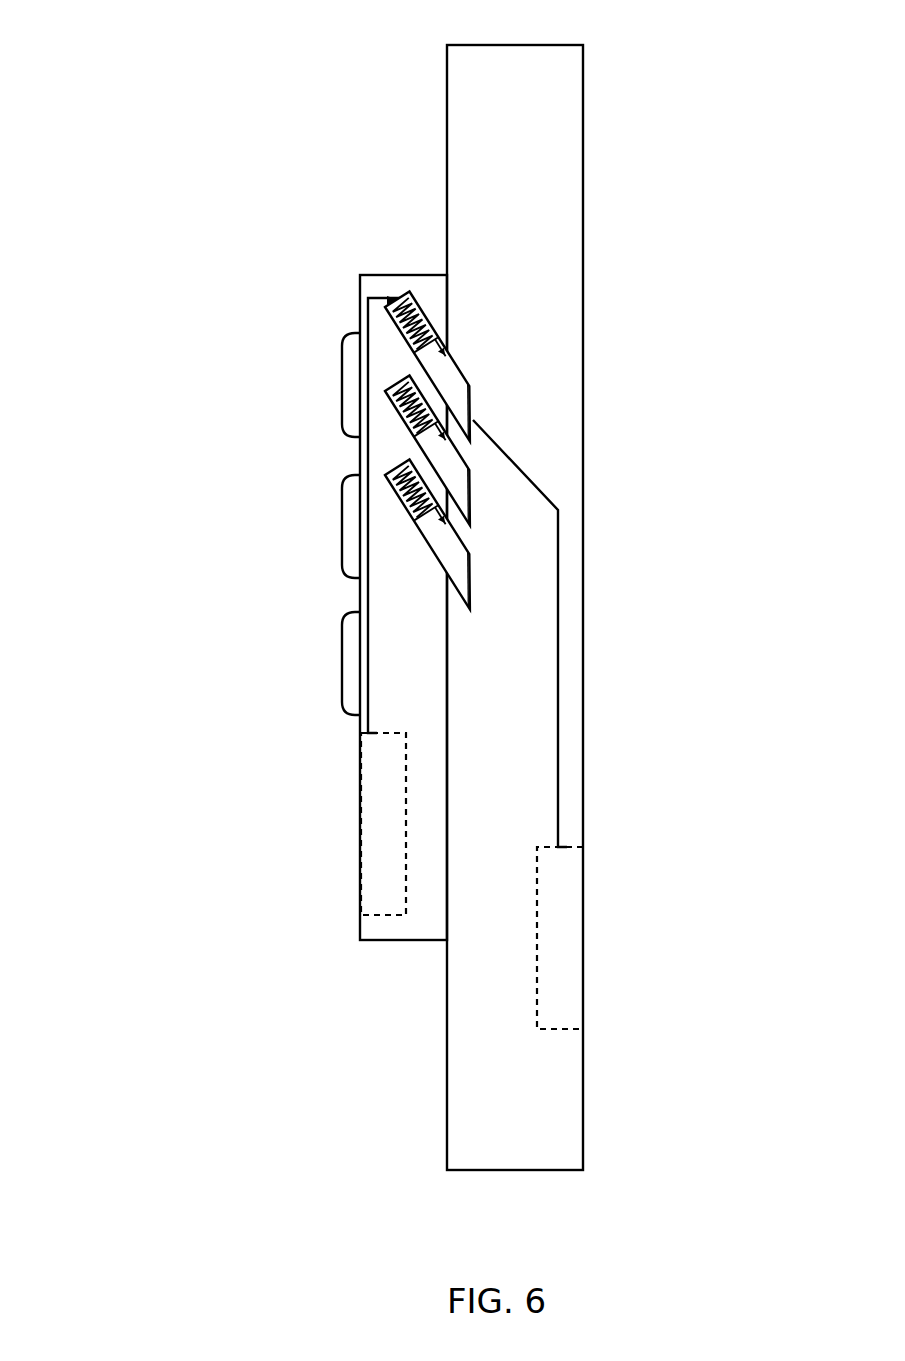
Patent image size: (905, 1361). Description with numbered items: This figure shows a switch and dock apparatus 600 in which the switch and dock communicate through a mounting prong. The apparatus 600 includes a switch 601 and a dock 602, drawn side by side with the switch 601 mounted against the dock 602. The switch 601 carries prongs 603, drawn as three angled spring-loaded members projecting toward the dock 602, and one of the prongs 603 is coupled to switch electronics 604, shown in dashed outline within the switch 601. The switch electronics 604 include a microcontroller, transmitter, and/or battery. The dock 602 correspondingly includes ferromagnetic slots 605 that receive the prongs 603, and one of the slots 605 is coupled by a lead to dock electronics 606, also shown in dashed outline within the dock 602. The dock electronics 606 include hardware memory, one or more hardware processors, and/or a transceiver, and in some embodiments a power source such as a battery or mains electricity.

The apparatus 600 is at (130, 80).
The switch 601 is at (438, 650).
The dock 602 is at (535, 805).
The prongs 603 is at (452, 377).
The switch electronics 604 is at (385, 733).
The ferromagnetic slots 605 is at (474, 406).
The dock electronics 606 is at (536, 925).